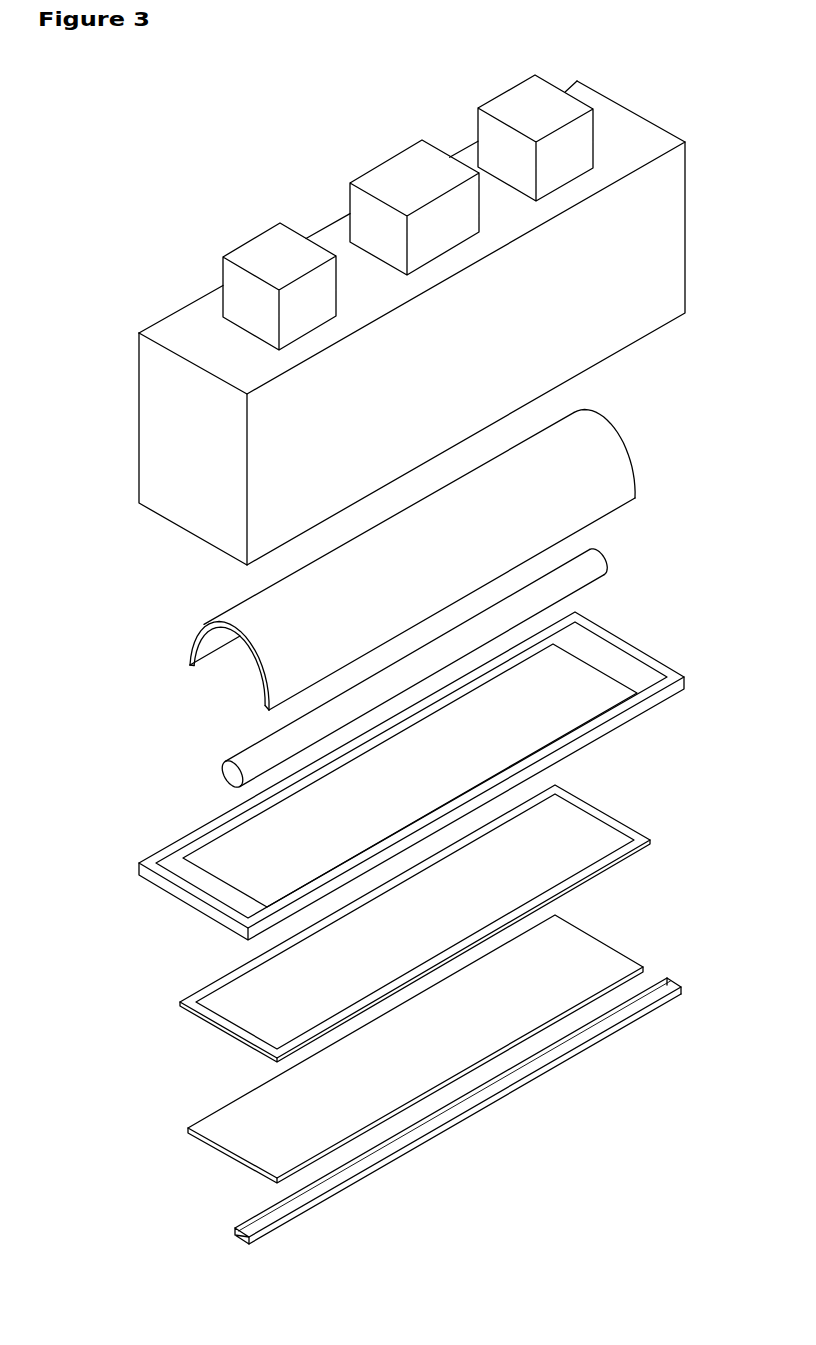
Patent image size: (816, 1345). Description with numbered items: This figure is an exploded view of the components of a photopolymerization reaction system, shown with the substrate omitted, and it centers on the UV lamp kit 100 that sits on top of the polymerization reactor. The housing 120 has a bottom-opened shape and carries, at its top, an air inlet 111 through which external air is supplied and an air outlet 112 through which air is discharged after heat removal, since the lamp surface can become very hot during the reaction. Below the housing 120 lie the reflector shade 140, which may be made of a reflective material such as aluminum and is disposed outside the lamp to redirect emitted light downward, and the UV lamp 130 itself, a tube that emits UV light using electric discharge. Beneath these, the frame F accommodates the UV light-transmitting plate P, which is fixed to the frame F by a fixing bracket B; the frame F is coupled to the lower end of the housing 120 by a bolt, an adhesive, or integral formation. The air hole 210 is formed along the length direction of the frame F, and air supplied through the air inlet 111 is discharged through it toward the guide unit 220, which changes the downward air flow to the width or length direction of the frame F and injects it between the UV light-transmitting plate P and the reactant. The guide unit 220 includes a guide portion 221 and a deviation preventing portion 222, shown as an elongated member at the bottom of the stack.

The UV lamp kit 100 is at (137, 145).
The air inlet 111 is at (256, 253).
The air outlet 112 is at (392, 178).
The housing 120 is at (189, 504).
The UV lamp 130 is at (597, 568).
The reflector shade 140 is at (615, 468).
The air hole 210 is at (605, 723).
The frame F is at (642, 669).
The fixing bracket B is at (648, 838).
The UV light-transmitting plate P is at (615, 958).
The guide unit 220 is at (457, 1094).
The guide portion 221 is at (267, 1217).
The deviation preventing portion 222 is at (675, 983).